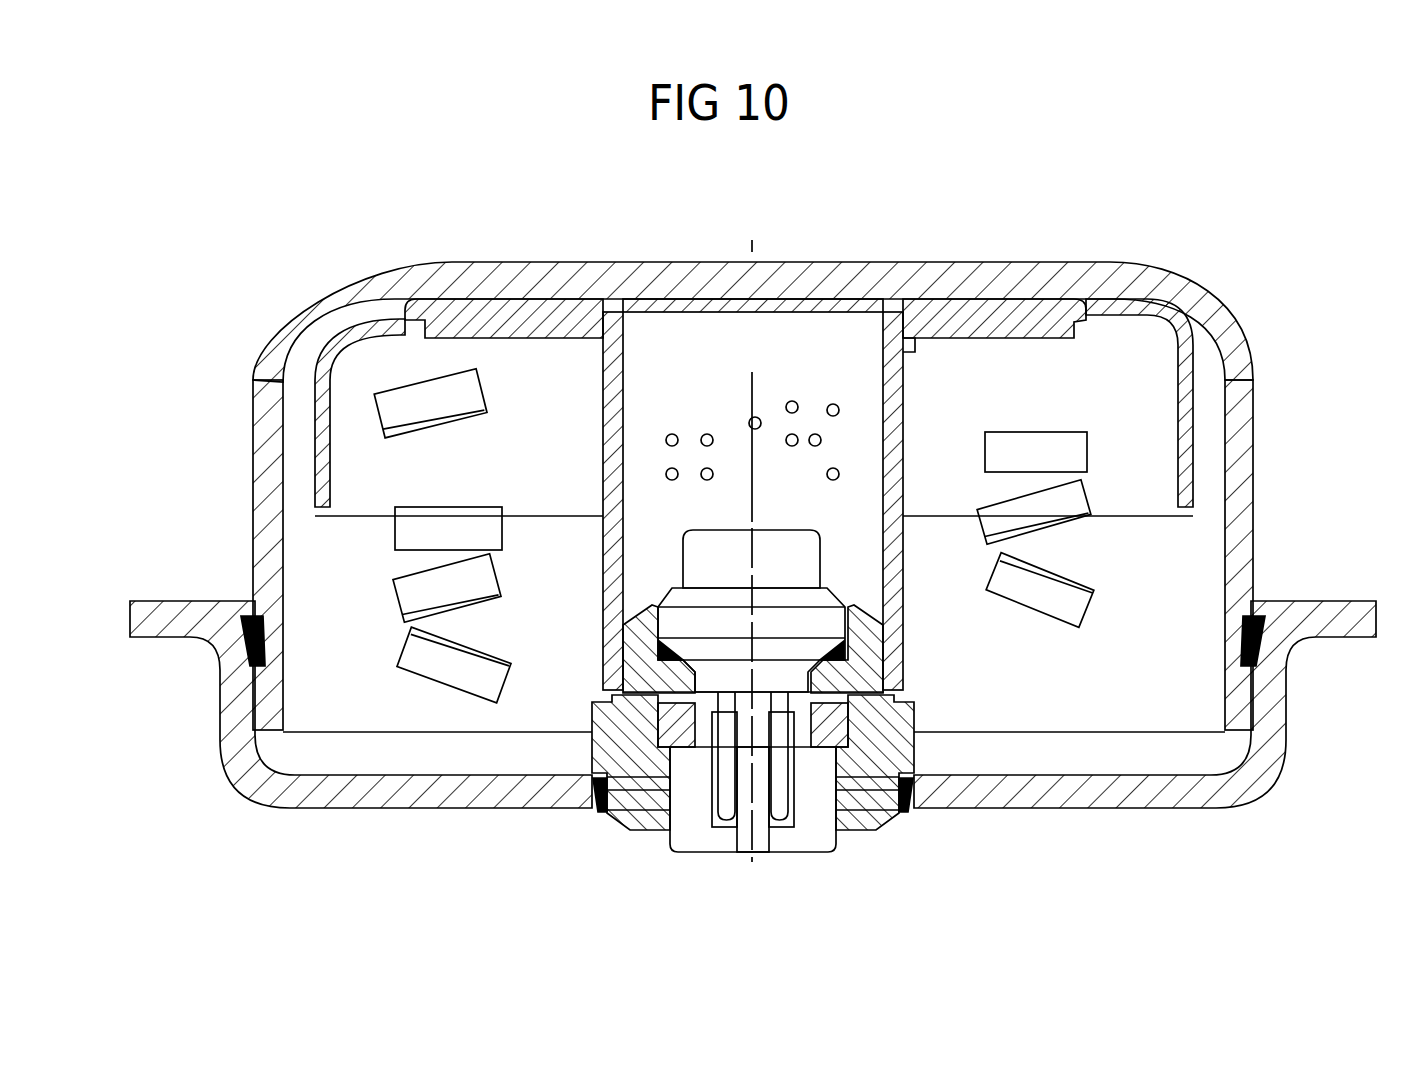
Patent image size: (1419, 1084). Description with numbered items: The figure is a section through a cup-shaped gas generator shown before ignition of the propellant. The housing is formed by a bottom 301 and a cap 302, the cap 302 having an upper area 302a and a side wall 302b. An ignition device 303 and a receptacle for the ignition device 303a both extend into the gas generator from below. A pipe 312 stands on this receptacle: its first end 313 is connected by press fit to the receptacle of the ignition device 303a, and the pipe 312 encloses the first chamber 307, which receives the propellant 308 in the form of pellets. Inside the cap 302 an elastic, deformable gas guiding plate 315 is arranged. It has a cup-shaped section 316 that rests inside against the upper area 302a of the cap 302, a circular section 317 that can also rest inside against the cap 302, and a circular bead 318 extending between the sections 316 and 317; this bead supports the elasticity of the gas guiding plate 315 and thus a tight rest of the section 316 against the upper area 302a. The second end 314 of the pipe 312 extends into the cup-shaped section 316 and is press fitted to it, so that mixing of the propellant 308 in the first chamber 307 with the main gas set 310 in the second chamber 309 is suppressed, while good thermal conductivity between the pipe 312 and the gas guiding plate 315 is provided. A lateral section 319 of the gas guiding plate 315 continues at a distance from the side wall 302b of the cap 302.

The bottom 301 is at (273, 793).
The cap 302 is at (792, 456).
The upper area of the cap 302a is at (712, 270).
The side wall of the cap 302b is at (1242, 482).
The ignition device 303 is at (839, 765).
The receptacle for the ignition device 303a is at (877, 812).
The first chamber 307 is at (751, 343).
The propellant 308 is at (707, 436).
The second chamber 309 is at (1145, 350).
The main gas set 310 is at (1077, 452).
The pipe 312 is at (915, 350).
The first end of the pipe 313 is at (893, 675).
The second end of the pipe 314 is at (895, 292).
The gas guiding plate 315 is at (1118, 313).
The cup-shaped section 316 is at (858, 303).
The circular section 317 is at (363, 318).
The circular bead 318 is at (495, 328).
The lateral section 319 is at (1188, 452).